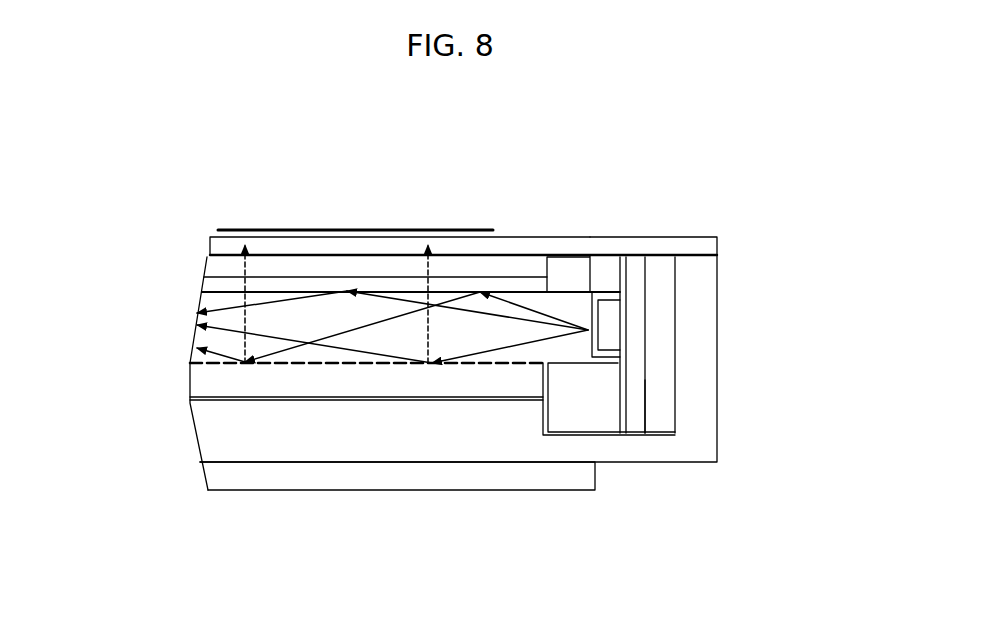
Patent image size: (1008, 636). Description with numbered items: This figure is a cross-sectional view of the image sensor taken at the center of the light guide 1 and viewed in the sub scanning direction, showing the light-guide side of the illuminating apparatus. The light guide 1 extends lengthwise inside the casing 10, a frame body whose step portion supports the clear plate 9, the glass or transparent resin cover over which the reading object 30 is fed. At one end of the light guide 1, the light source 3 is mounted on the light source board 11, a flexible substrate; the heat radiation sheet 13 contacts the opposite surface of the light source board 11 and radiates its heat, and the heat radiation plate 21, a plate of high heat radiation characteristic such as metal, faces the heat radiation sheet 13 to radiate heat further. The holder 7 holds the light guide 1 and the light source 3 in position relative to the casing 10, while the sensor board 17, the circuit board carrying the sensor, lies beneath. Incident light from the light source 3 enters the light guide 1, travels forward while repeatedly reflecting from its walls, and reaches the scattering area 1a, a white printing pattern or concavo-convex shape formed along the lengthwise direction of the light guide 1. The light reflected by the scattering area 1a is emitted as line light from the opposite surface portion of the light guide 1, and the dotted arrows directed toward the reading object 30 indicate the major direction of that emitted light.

The light guide 1 is at (195, 327).
The scattering area 1a is at (398, 363).
The light source 3 is at (588, 330).
The holder 7 is at (585, 412).
The clear plate 9 is at (227, 243).
The casing 10 is at (697, 413).
The light source board 11 is at (628, 276).
The heat radiation sheet 13 is at (637, 332).
The sensor board 17 is at (537, 478).
The heat radiation plate 21 is at (660, 390).
The reading object 30 is at (298, 230).